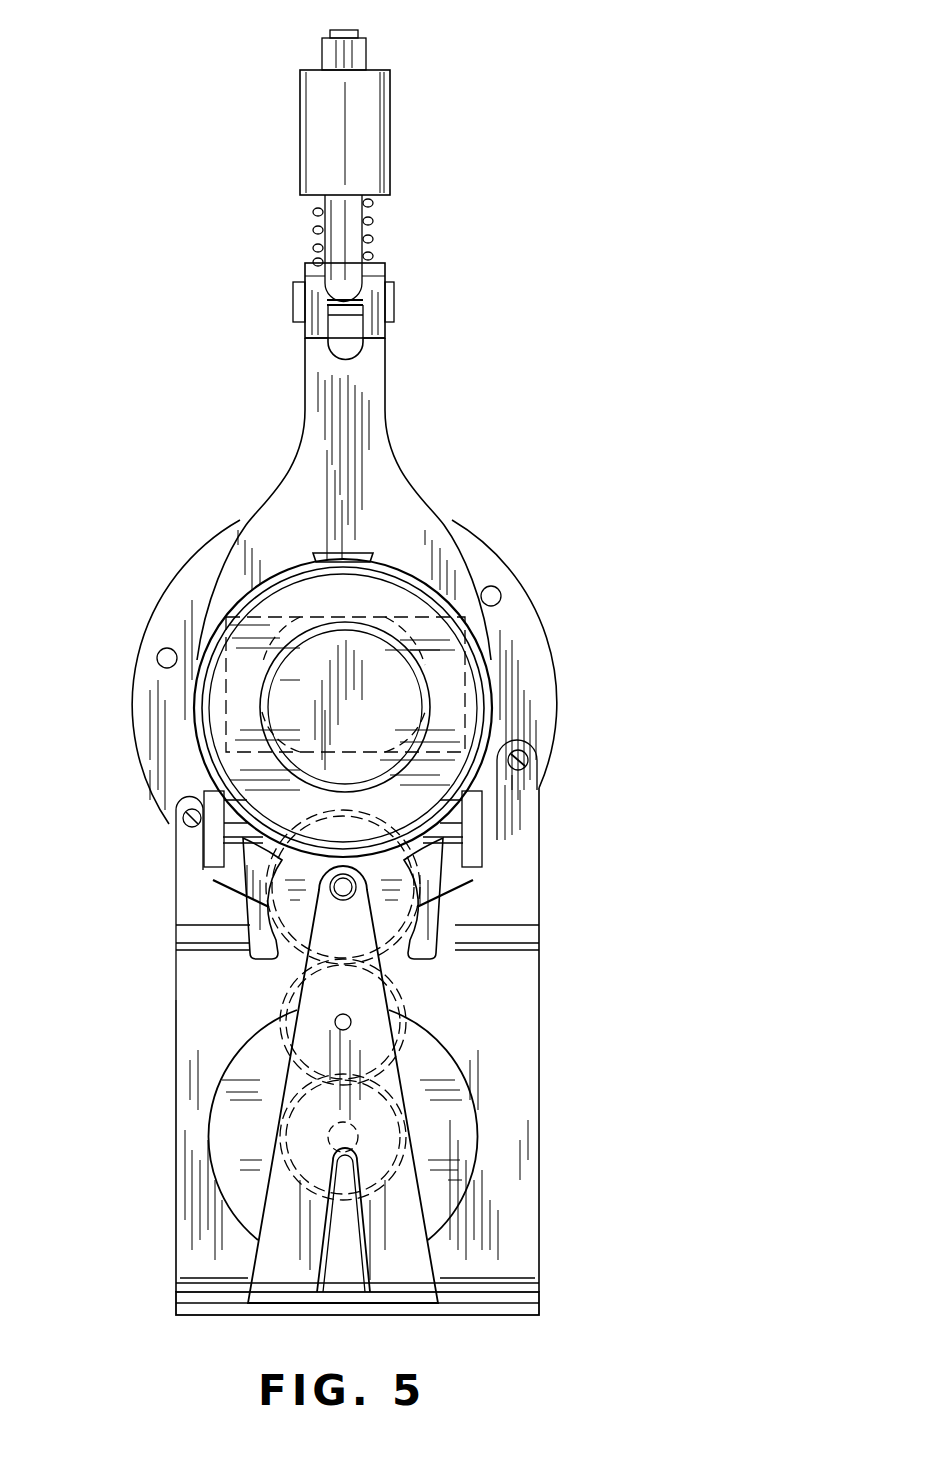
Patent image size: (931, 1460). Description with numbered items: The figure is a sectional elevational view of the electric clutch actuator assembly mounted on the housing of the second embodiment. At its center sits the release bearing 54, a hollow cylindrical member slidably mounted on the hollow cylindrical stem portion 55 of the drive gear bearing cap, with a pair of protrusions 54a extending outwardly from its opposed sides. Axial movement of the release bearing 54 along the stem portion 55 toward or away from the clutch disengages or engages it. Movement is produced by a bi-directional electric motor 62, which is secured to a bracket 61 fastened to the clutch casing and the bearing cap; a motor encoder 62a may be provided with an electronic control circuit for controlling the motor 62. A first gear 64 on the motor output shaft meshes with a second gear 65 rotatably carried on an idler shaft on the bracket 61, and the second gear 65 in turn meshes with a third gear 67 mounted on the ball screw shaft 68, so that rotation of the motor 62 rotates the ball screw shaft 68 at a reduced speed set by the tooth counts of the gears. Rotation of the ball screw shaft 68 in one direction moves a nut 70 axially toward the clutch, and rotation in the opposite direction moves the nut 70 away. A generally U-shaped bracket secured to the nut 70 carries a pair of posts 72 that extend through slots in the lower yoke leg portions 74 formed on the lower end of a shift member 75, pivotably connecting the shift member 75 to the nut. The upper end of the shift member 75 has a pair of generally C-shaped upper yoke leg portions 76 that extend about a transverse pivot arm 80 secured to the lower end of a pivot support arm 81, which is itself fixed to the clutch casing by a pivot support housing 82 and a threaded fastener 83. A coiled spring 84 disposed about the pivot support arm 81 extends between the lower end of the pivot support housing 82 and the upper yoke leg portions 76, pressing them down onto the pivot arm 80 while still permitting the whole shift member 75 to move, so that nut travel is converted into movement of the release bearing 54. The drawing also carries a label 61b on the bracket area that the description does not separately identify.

The threaded fastener 83 is at (368, 45).
The pivot support housing 82 is at (390, 90).
The pivot support arm 81 is at (343, 235).
The coiled spring 84 is at (375, 221).
The upper yoke leg portions 76 is at (385, 268).
The transverse pivot arm 80 is at (393, 313).
The shift member 75 is at (330, 393).
The lower yoke leg portions 74 is at (215, 595).
The release bearing 54 is at (430, 592).
The protrusions 54a is at (470, 702).
The hollow cylindrical stem portion 55 is at (308, 652).
The posts 72 is at (240, 870).
The nut 70 is at (300, 915).
The ball screw shaft 68 is at (333, 905).
The third gear 67 is at (413, 920).
The second gear 65 is at (437, 1020).
The bi-directional electric motor 62 is at (470, 1127).
The motor encoder 62a is at (425, 1135).
The first gear 64 is at (400, 1170).
The upright 61b is at (292, 1083).
The bracket 61 is at (538, 1305).